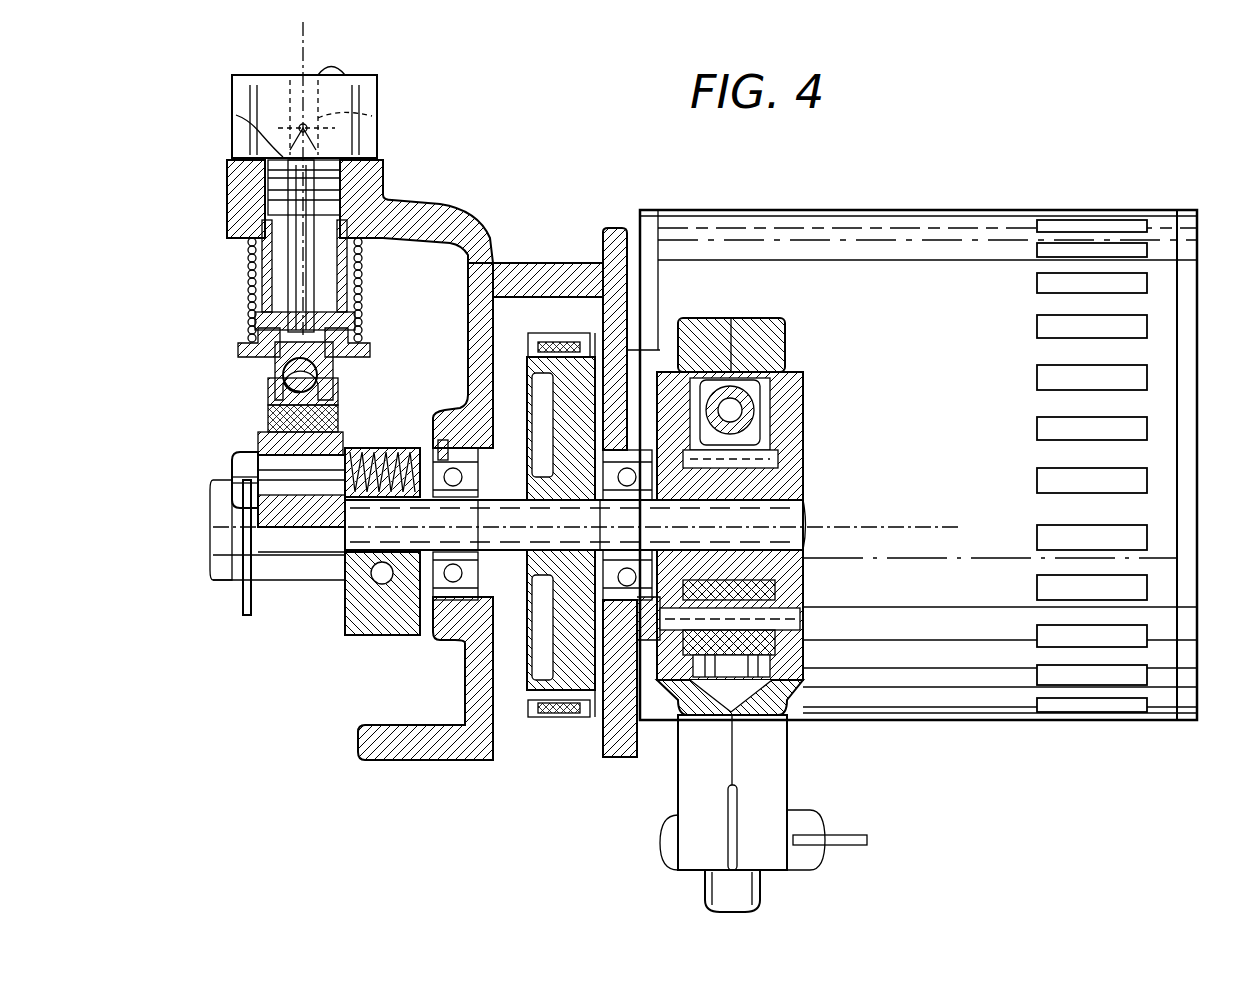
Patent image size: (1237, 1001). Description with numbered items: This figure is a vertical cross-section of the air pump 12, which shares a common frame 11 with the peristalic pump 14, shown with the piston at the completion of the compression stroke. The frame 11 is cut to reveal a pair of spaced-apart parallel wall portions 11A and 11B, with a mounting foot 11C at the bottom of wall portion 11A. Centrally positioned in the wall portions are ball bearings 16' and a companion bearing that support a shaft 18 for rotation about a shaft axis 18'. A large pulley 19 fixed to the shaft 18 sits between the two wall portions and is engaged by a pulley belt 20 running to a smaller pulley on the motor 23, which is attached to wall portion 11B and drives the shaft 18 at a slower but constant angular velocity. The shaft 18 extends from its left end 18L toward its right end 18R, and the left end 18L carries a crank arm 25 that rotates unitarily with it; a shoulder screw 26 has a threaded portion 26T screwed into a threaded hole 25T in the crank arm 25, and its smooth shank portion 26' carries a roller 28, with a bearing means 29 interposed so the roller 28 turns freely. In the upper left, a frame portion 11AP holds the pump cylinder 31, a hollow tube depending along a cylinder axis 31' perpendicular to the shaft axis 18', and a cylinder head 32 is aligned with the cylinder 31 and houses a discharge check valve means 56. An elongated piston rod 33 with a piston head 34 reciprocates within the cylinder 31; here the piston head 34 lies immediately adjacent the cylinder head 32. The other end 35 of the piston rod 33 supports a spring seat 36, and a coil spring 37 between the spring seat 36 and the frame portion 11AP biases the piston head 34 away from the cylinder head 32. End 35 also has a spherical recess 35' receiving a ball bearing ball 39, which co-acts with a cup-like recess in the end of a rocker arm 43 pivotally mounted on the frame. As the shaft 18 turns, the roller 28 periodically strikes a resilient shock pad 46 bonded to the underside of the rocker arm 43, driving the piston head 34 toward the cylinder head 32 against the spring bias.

The frame 11 is at (423, 460).
The wall portion 11A is at (467, 338).
The frame portion 11AP is at (227, 218).
The wall portion 11B is at (630, 292).
The mounting foot 11C is at (390, 720).
The air pump 12 is at (203, 152).
The peristalic pump 14 is at (820, 358).
The ball bearing 16' is at (485, 531).
The shaft 18 is at (609, 512).
The shaft axis 18' is at (632, 508).
The left end of shaft 18L is at (330, 575).
The shaft right end 18R is at (806, 555).
The large pulley 19 is at (535, 720).
The pulley belt 20 is at (560, 345).
The motor 23 is at (910, 207).
The crank arm 25 is at (362, 637).
The threaded hole 25T is at (440, 440).
The shoulder screw 26 is at (214, 480).
The smooth shank portion 26' is at (301, 506).
The threaded portion 26T is at (370, 425).
The roller 28 is at (258, 440).
The bearing means 29 is at (310, 560).
The pump cylinder 31 is at (352, 246).
The cylinder axis 31' is at (425, 178).
The cylinder head 32 is at (380, 130).
The piston rod 33 is at (248, 280).
The piston head 34 is at (236, 117).
The other end of piston rod 35 is at (246, 375).
The spherical recess 35' is at (249, 398).
The spring seat 36 is at (238, 345).
The coil spring 37 is at (362, 288).
The ball bearing ball 39 is at (335, 375).
The rocker arm 43 is at (340, 393).
The shock pad 46 is at (268, 418).
The discharge check valve means 56 is at (372, 104).